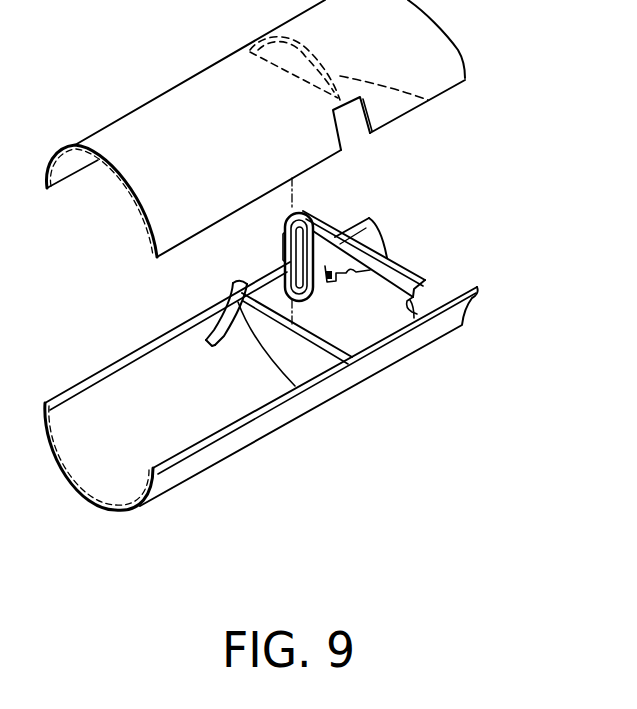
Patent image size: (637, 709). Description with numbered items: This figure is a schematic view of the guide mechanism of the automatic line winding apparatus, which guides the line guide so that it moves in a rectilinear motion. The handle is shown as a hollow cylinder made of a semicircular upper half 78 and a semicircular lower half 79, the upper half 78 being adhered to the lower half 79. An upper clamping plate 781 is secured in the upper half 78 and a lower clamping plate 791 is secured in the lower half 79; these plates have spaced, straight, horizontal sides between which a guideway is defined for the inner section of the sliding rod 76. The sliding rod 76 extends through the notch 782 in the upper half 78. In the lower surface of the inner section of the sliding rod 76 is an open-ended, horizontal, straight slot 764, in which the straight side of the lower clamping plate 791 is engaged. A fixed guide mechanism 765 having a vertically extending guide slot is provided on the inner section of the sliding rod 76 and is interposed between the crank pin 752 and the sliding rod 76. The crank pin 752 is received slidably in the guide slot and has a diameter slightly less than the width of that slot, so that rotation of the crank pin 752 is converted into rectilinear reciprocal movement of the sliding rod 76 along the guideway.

The upper half 78 is at (203, 103).
The upper clamping plate 781 is at (428, 100).
The notch 782 is at (350, 122).
The lower half 79 is at (255, 429).
The lower clamping plate 791 is at (313, 358).
The crank pin 752 is at (240, 287).
The guide mechanism 765 is at (290, 243).
The sliding rod 76 is at (373, 258).
The slot 764 is at (332, 279).